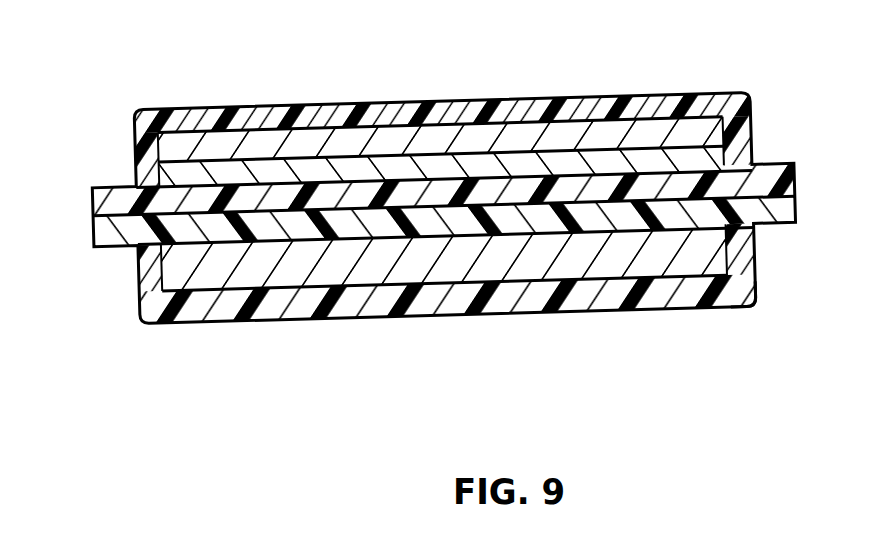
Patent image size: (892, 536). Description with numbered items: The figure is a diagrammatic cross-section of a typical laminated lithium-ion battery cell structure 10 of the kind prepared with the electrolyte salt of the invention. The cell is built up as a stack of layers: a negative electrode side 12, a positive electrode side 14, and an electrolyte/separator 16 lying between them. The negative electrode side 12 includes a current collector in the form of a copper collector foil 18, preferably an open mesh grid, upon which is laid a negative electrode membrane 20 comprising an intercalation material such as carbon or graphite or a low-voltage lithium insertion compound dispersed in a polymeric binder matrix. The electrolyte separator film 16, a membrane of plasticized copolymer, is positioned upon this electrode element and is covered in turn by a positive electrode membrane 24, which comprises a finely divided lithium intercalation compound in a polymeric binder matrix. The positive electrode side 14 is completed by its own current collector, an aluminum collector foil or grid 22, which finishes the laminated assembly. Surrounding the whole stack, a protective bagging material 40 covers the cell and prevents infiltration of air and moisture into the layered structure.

The laminated battery cell structure 10 is at (763, 92).
The negative electrode side 12 is at (402, 120).
The positive electrode side 14 is at (292, 278).
The electrolyte/separator 16 is at (680, 183).
The copper collector foil 18 is at (553, 137).
The negative electrode membrane 20 is at (175, 178).
The aluminum collector foil or grid 22 is at (177, 267).
The positive electrode membrane 24 is at (705, 225).
The protective bagging material 40 is at (740, 303).